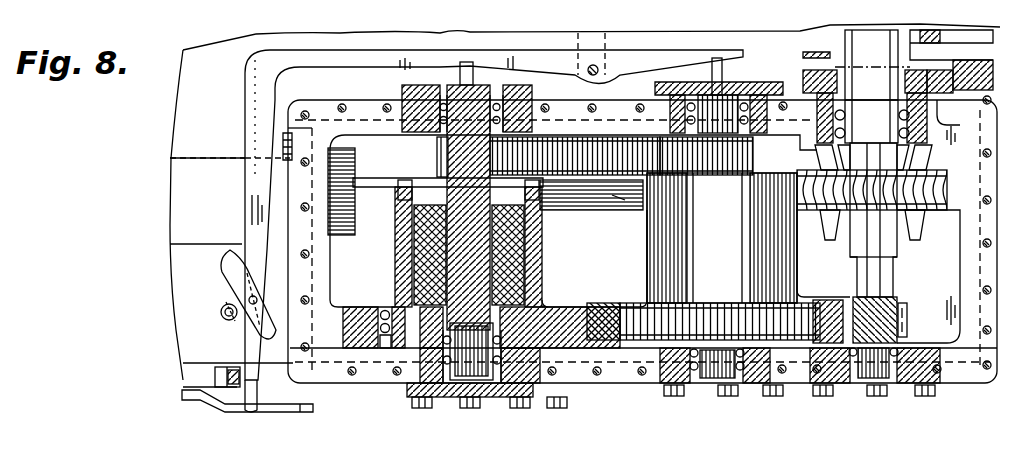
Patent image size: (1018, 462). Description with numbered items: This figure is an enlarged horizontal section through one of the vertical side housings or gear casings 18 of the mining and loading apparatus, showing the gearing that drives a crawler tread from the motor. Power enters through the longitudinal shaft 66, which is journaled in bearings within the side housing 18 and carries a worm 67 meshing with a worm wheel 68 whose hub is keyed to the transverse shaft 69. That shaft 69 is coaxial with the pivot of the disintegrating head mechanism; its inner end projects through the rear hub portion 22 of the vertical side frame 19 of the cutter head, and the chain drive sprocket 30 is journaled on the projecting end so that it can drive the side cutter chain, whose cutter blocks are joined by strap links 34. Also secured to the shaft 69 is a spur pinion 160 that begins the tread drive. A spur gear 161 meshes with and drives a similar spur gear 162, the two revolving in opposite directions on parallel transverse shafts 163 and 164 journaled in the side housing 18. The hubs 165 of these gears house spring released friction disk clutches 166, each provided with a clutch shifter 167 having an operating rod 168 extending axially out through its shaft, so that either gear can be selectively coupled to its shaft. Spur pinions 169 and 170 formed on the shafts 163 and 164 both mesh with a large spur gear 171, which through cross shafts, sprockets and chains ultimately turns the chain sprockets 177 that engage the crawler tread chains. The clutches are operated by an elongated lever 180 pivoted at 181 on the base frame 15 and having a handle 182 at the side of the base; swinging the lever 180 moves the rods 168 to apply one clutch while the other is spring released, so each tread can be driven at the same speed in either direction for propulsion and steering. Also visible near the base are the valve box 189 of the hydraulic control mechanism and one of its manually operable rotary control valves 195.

The base frame 15 is at (182, 92).
The chain sprockets 177 is at (345, 8).
The valve box 189 is at (192, 273).
The handle 182 is at (197, 402).
The rotary control valve 195 is at (217, 378).
The elongated lever 180 is at (517, 55).
The pivot 181 is at (598, 66).
The operating rod 168 is at (455, 68).
The large spur gear 171 is at (600, 150).
The spur pinion 169 is at (750, 153).
The spur pinion 170 is at (443, 152).
The clutch shifter 167 is at (420, 243).
The spring released friction disk clutch 166 is at (543, 277).
The spur gear 162 is at (362, 323).
The transverse shaft 164 is at (477, 360).
The hub 165 is at (658, 222).
The longitudinal shaft 66 is at (617, 197).
The spur gear 161 is at (690, 318).
The transverse shaft 163 is at (722, 363).
The rear hub portion 22 is at (830, 70).
The drive sprocket 30 is at (925, 30).
The strap link 34 is at (950, 44).
The side frame 19 is at (965, 70).
The transverse shaft 69 is at (880, 276).
The worm wheel 68 is at (913, 228).
The worm 67 is at (830, 222).
The spur pinion 160 is at (906, 317).
The side housing 18 is at (973, 365).